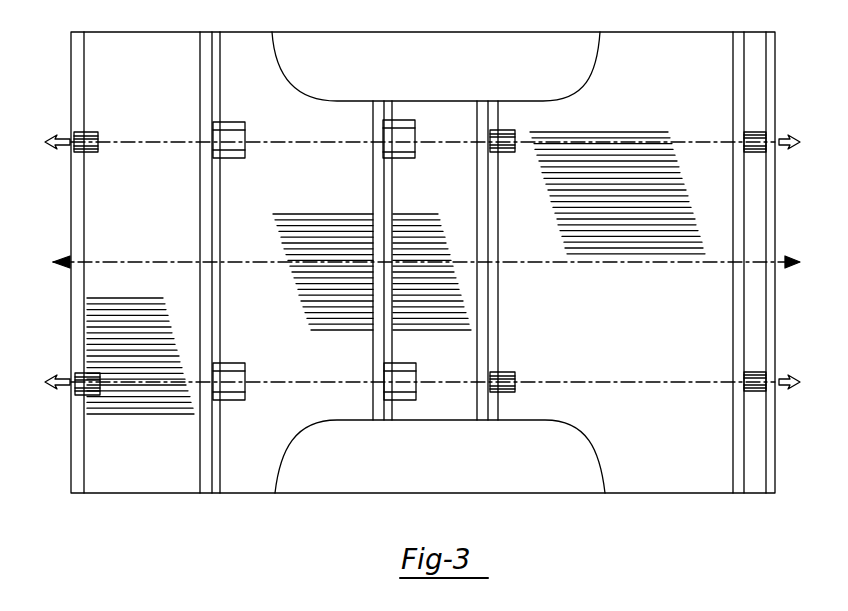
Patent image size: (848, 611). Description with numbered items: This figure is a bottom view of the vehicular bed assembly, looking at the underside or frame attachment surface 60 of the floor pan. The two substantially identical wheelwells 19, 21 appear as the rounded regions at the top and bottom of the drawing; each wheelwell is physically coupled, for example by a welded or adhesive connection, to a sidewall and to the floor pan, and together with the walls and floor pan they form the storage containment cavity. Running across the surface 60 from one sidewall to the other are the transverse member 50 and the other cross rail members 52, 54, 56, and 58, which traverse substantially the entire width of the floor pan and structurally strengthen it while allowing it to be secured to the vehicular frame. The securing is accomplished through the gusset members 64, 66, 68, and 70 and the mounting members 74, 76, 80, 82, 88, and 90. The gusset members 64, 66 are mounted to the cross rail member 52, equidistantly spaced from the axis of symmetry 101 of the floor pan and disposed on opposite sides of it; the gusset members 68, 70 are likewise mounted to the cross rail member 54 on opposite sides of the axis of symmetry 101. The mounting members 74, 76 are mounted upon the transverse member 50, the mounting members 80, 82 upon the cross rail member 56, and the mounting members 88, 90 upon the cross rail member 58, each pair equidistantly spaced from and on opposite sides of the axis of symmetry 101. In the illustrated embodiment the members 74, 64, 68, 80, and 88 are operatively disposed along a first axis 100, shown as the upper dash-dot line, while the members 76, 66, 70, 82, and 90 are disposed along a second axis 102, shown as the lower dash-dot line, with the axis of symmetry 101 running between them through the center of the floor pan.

The wheelwell 19 is at (444, 459).
The wheelwell 21 is at (448, 74).
The transverse member 50 is at (80, 193).
The cross rail member 52 is at (212, 193).
The cross rail member 54 is at (388, 195).
The cross rail member 56 is at (503, 120).
The cross rail member 58 is at (733, 76).
The frame attachment surface 60 is at (632, 293).
The gusset member 64 is at (232, 127).
The gusset member 66 is at (228, 363).
The gusset member 68 is at (400, 117).
The gusset member 70 is at (400, 362).
The mounting member 74 is at (88, 130).
The mounting member 76 is at (100, 393).
The mounting member 80 is at (503, 152).
The mounting member 82 is at (512, 372).
The mounting member 88 is at (752, 130).
The mounting member 90 is at (743, 383).
The first axis 100 is at (63, 137).
The axis of symmetry 101 is at (780, 262).
The second axis 102 is at (63, 378).